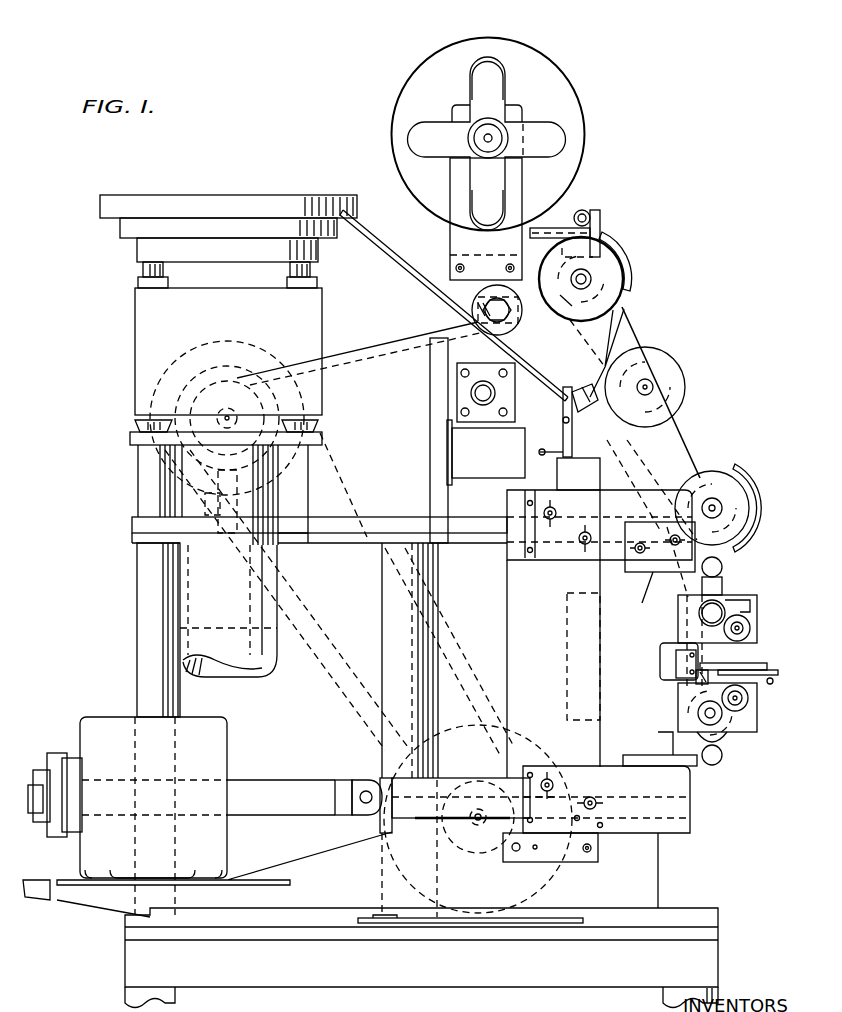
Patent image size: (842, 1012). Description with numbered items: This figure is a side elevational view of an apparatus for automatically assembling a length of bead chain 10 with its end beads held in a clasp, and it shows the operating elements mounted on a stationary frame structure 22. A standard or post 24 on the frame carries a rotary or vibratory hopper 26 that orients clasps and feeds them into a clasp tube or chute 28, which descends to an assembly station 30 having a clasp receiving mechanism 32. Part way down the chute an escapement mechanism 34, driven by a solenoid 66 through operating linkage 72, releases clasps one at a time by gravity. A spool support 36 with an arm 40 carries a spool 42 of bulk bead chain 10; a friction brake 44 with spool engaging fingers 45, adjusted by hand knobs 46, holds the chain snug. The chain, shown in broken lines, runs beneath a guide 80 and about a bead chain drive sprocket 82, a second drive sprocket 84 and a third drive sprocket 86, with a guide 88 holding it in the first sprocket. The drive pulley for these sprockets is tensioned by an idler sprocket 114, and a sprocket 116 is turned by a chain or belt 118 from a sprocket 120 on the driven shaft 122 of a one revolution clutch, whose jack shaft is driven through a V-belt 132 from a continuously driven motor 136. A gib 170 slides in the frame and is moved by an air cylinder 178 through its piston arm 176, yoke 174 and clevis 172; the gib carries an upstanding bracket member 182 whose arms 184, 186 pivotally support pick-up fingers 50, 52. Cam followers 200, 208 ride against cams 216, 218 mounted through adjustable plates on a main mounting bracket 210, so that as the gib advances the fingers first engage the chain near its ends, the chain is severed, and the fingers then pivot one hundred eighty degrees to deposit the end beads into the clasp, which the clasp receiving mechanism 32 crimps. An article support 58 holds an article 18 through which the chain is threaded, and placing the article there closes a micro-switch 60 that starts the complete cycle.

The bead chain 10 is at (616, 344).
The article 18 is at (730, 667).
The stationary frame structure 22 is at (135, 610).
The standard or post 24 is at (282, 658).
The rotary or vibratory hopper 26 is at (198, 195).
The clasp tube or chute 28 is at (388, 250).
The assembly station 30 is at (742, 587).
The clasp receiving mechanism 32 is at (660, 662).
The escapement mechanism 34 is at (574, 394).
The spool support 36 is at (472, 312).
The arm 40 is at (520, 194).
The spool 42 is at (584, 92).
The friction brake 44 is at (562, 139).
The spool engaging fingers 45 is at (503, 68).
The hand knobs 46 is at (466, 133).
The pick-up finger 50 is at (756, 596).
The pick-up finger 52 is at (724, 760).
The article support 58 is at (752, 700).
The micro-switch 60 is at (694, 682).
The solenoid 66 is at (486, 480).
The operating linkage 72 is at (568, 392).
The guide 80 is at (590, 208).
The bead chain drive sprocket 82 is at (620, 305).
The second drive sprocket 84 is at (685, 380).
The third drive sprocket 86 is at (730, 460).
The guide 88 is at (630, 250).
The idler sprocket 114 is at (486, 268).
The sprocket 116 is at (420, 400).
The chain or belt 118 is at (335, 368).
The sprocket 120 is at (318, 374).
The driven shaft 122 is at (242, 412).
The V-belt 132 is at (447, 660).
The continuously driven motor 136 is at (516, 722).
The gib 170 is at (442, 826).
The clevis 172 is at (360, 776).
The yoke 174 is at (356, 818).
The piston arm 176 is at (244, 780).
The air cylinder 178 is at (200, 717).
The upstanding bracket member 182 is at (567, 634).
The arm 184 is at (752, 626).
The arm 186 is at (755, 735).
The cam follower 200 is at (700, 570).
The cam follower 208 is at (722, 765).
The main mounting bracket 210 is at (505, 598).
The cam 216 is at (634, 597).
The cam 218 is at (692, 790).